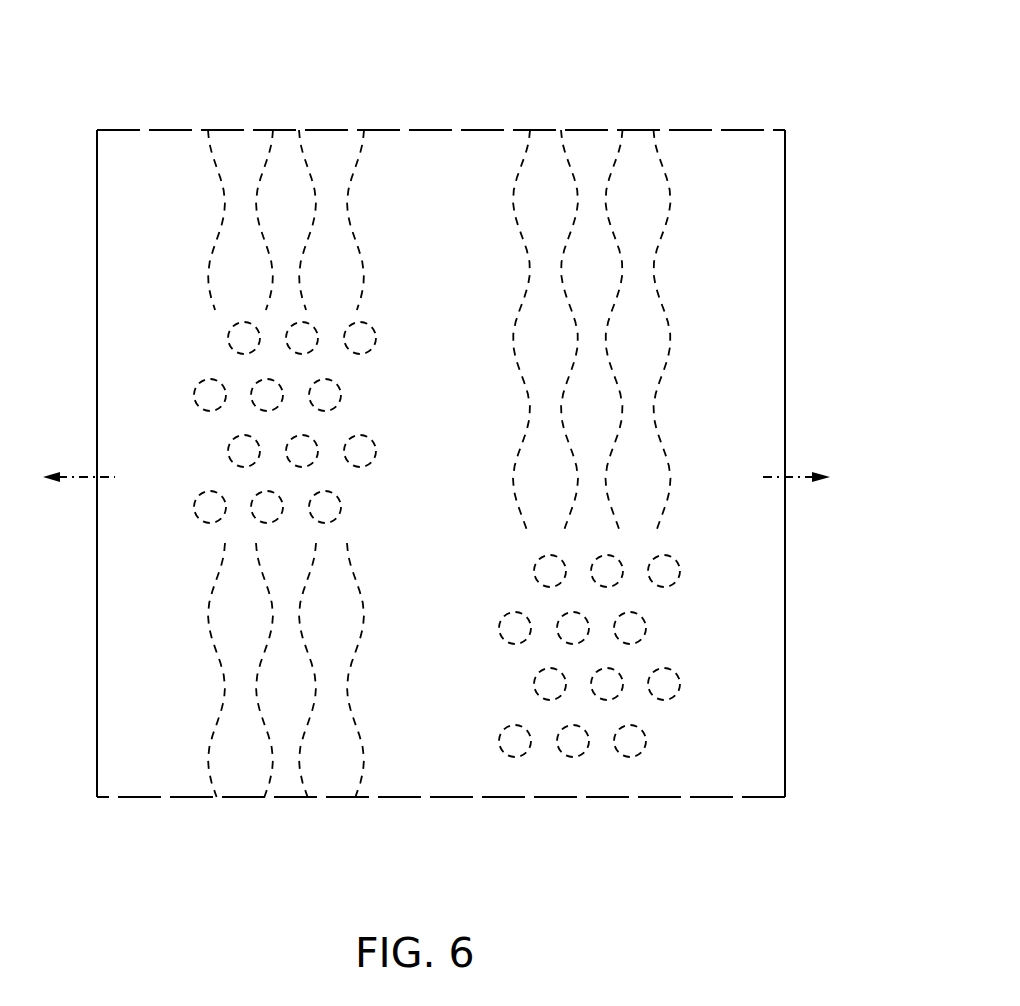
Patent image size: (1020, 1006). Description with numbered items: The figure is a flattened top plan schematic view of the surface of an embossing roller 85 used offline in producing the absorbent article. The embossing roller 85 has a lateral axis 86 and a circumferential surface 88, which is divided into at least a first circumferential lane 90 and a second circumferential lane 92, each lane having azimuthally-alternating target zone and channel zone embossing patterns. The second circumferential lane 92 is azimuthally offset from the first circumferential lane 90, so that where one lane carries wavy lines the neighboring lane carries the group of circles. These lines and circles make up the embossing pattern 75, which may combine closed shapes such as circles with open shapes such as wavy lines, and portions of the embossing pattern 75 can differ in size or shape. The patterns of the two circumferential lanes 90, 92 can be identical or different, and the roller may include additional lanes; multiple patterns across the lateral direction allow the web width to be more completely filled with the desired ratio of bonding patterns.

The embossing pattern 75 is at (275, 92).
The embossing roller 85 is at (741, 78).
The lateral axis 86 is at (73, 477).
The circumferential surface 88 is at (760, 273).
The first circumferential lane 90 is at (287, 840).
The second circumferential lane 92 is at (598, 840).